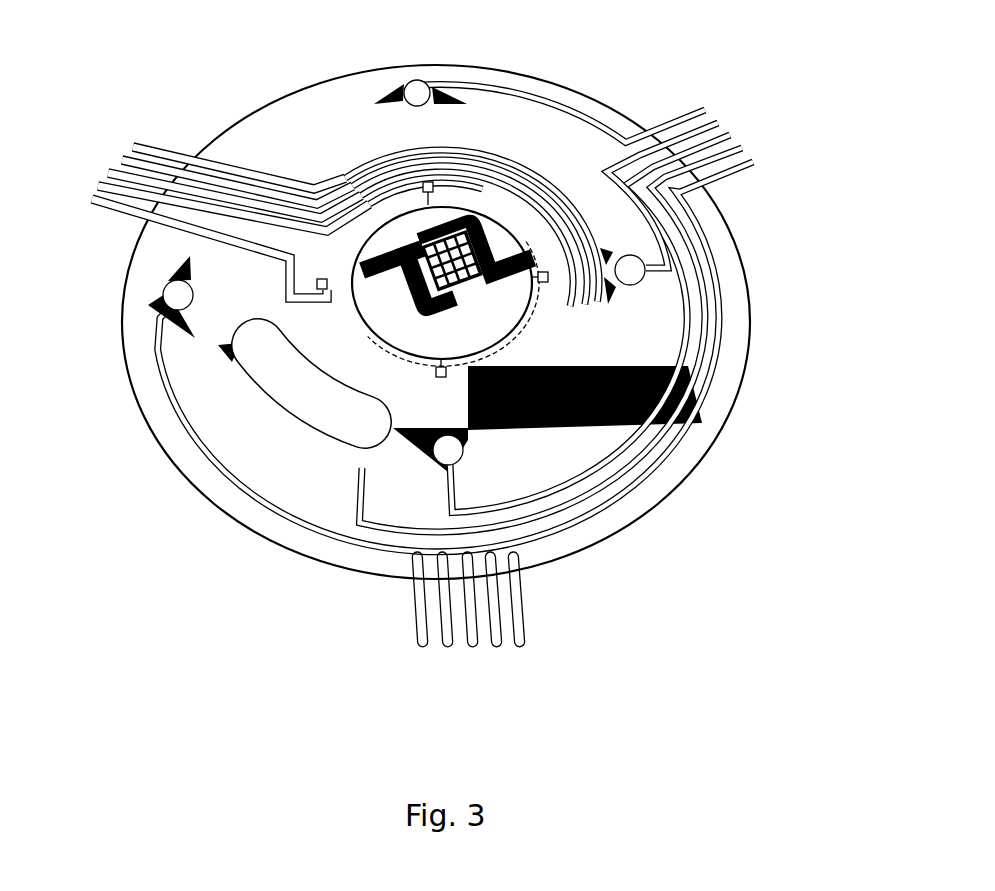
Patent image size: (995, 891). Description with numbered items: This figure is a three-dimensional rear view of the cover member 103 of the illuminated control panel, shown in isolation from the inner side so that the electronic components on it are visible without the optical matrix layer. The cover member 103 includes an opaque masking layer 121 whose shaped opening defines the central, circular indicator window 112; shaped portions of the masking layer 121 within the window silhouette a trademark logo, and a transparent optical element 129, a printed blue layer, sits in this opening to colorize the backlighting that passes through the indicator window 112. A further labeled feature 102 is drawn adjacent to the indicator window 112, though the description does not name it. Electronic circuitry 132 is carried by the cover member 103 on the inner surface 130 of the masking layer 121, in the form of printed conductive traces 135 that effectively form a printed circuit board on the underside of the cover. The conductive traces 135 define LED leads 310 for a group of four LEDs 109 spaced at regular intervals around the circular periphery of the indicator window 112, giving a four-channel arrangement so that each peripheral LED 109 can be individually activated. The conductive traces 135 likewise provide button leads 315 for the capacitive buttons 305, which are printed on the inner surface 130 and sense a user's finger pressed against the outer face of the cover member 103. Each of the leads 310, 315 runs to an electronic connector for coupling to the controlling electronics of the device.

The cover member 103 is at (762, 433).
The conductive traces 135 is at (593, 513).
The electronic circuitry 132 is at (498, 133).
The inner surface 130 is at (568, 143).
The masking layer 121 is at (297, 490).
The LED leads 310 is at (233, 240).
The button leads 315 is at (653, 227).
The central sensor element 102 is at (386, 224).
The indicator window 112 is at (526, 326).
The optical element 129 is at (392, 305).
The LEDs 109 is at (412, 200).
The capacitive buttons 305 is at (420, 93).